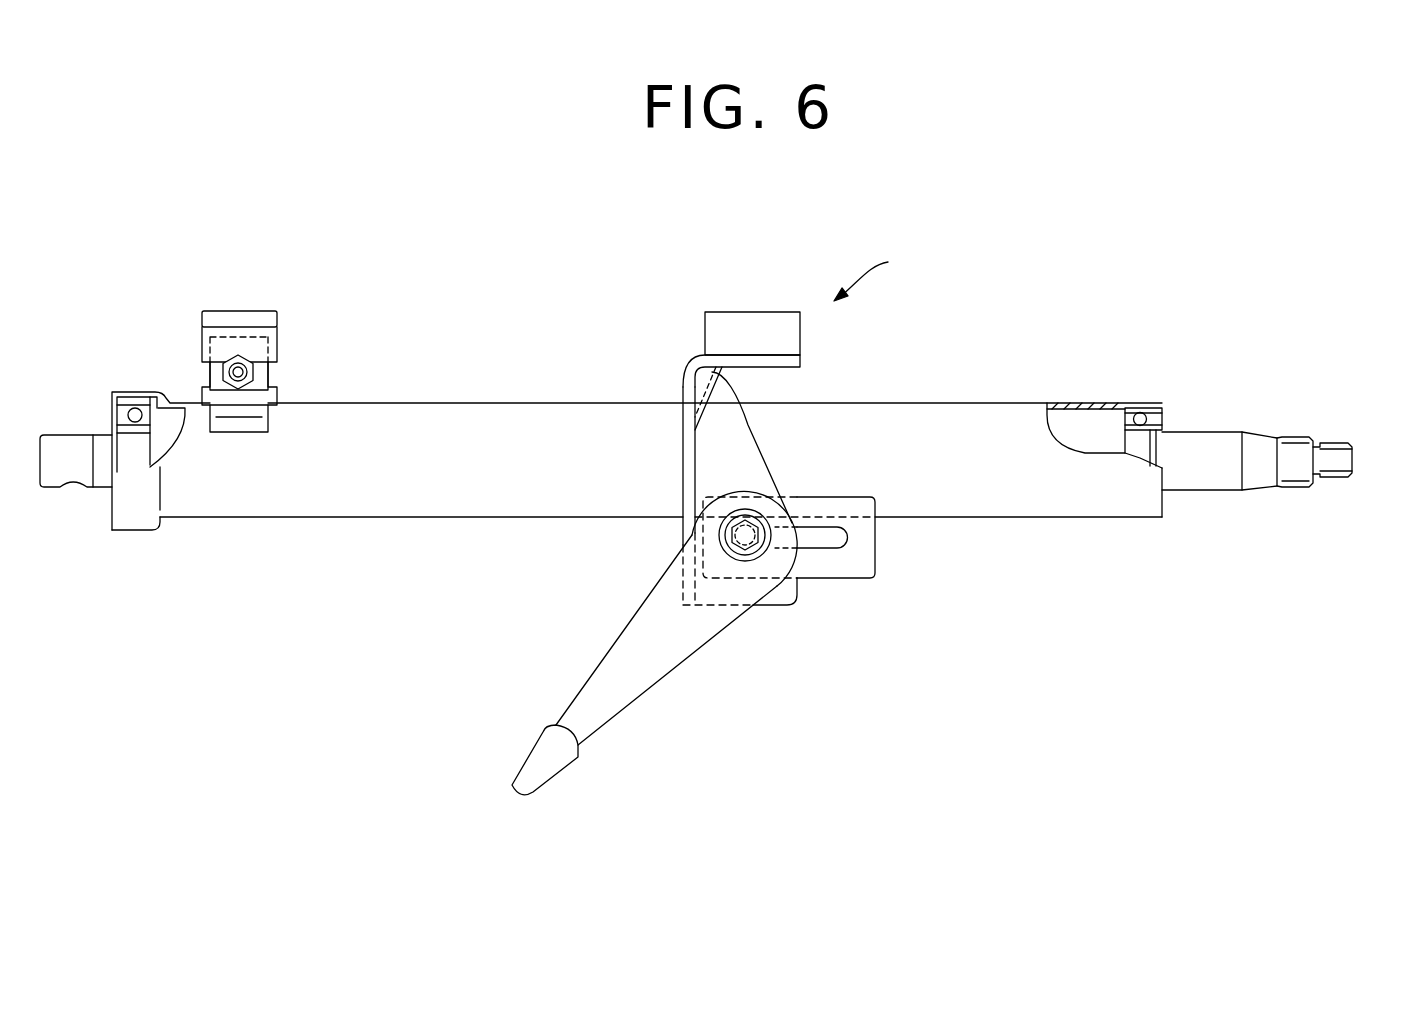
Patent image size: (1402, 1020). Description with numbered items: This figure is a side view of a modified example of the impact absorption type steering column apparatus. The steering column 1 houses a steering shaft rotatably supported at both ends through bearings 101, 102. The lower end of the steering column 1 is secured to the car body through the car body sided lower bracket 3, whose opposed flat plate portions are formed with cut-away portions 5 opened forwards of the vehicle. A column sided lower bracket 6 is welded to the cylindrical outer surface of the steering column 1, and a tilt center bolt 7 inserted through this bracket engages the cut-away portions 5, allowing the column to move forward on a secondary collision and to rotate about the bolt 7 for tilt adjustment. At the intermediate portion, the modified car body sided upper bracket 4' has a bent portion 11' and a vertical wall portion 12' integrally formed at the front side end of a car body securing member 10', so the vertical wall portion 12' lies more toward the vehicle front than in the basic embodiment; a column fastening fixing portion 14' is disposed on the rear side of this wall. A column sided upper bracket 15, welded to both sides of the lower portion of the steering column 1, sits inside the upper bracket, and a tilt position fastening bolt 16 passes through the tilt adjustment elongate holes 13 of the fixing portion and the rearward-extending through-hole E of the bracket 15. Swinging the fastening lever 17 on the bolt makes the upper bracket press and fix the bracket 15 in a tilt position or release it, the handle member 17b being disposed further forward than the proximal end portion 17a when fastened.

The steering column 1 is at (1095, 403).
The car body sided lower bracket 3 is at (237, 310).
The cut-away portions 5 is at (202, 370).
The column sided lower bracket 6 is at (263, 418).
The tilt center bolt 7 is at (256, 362).
The bearing 101 is at (1148, 410).
The bearing 102 is at (127, 400).
The car body securing member 10' is at (752, 302).
The bent portion 11' is at (709, 334).
The vertical wall portion 12' is at (696, 480).
The column fastening fixing portion 14' is at (776, 438).
The car body sided upper bracket 4' is at (875, 269).
The tilt adjustment elongate holes 13 is at (732, 565).
The column sided upper bracket 15 is at (865, 553).
The tilt position fastening bolt 16 is at (755, 555).
The fastening lever 17 is at (627, 683).
The proximal end portion 17a is at (705, 522).
The handle member 17b is at (545, 765).
The through-hole E is at (808, 552).